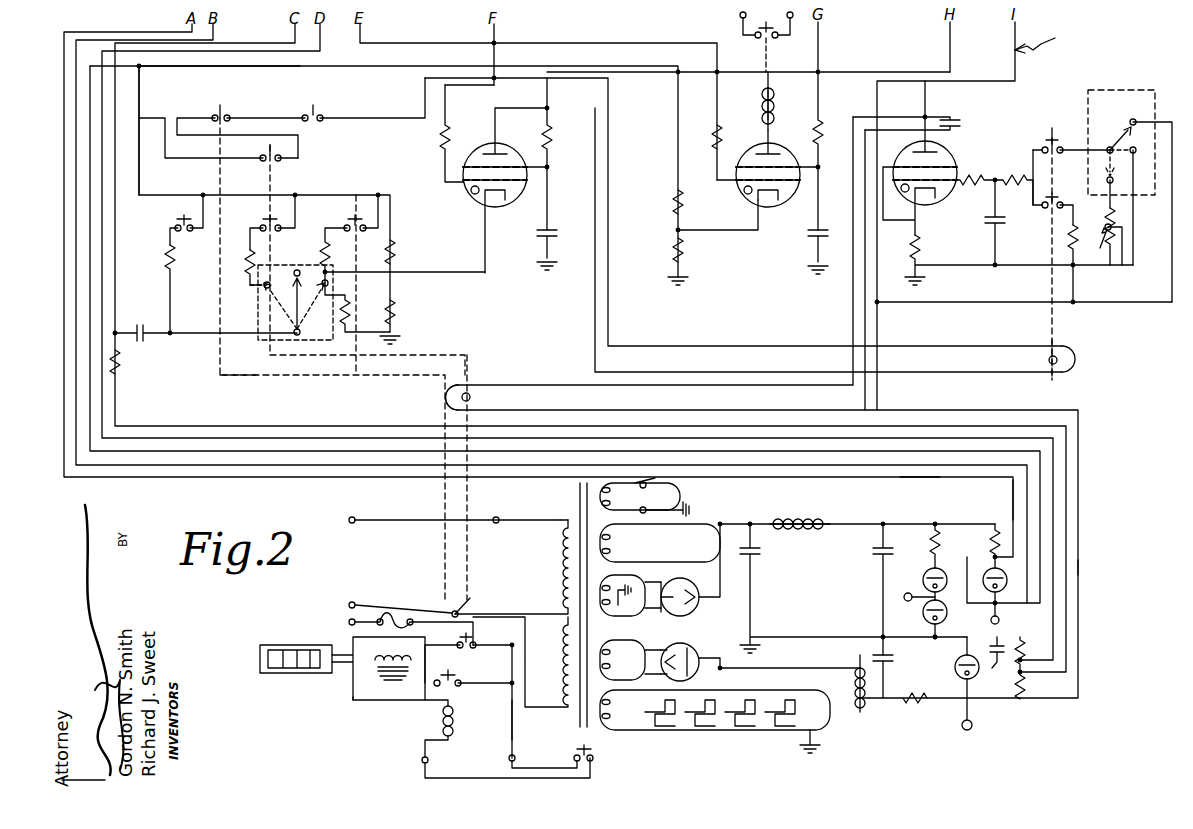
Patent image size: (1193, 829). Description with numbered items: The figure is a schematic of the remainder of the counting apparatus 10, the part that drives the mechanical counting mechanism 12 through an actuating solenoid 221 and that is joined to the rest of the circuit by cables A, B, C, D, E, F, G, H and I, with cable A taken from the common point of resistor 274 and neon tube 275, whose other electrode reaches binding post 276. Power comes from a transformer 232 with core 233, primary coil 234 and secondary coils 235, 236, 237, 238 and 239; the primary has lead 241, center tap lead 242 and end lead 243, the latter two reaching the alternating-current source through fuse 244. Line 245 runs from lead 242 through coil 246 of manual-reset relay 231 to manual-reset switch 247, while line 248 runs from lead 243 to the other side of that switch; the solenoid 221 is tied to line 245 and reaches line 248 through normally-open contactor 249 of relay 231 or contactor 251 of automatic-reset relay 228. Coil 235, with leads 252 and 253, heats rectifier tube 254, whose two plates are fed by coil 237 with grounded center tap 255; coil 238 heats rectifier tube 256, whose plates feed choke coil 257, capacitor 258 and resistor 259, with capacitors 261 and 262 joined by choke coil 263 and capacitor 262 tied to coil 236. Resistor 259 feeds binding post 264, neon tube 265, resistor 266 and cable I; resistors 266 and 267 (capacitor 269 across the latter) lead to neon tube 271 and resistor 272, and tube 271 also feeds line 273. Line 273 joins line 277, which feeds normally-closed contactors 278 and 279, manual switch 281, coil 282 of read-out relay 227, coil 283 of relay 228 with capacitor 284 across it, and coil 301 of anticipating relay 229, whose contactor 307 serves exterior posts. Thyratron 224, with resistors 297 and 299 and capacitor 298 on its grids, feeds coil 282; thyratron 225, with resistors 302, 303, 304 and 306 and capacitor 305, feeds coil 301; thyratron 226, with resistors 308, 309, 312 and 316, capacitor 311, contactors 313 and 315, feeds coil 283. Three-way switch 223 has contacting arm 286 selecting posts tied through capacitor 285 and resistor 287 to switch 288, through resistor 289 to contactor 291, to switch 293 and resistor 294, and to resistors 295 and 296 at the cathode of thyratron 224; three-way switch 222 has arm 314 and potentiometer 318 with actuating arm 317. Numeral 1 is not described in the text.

The control device 1 is at (1078, 565).
The counting apparatus 10 is at (1042, 43).
The mechanical counting mechanism 12 is at (278, 645).
The actuating solenoid 221 is at (385, 652).
The three-way switch 222 is at (1105, 90).
The three-way switch 223 is at (258, 345).
The thyratron 224 is at (483, 150).
The thyratron 225 is at (795, 200).
The thyratron 226 is at (940, 200).
The read-out relay 227 is at (1058, 345).
The automatic-reset relay 228 is at (470, 378).
The anticipating relay 229 is at (760, 100).
The manual-reset relay 231 is at (452, 752).
The transformer 232 is at (562, 518).
The core 233 is at (580, 497).
The primary coil 234 is at (557, 568).
The secondary coil 235 is at (640, 496).
The secondary coil 236 is at (612, 540).
The secondary coil 237 is at (618, 583).
The secondary coil 238 is at (612, 660).
The secondary coil 239 is at (612, 707).
The lead 241 is at (496, 516).
The center tap lead 242 is at (478, 590).
The end lead 243 is at (545, 658).
The fuse 244 is at (398, 615).
The line 245 is at (350, 697).
The coil 246 is at (440, 712).
The manual-reset switch 247 is at (590, 752).
The line 248 is at (514, 725).
The normally-open contactor 249 is at (455, 680).
The normally-open contactor 251 is at (476, 640).
The lead 252 is at (646, 484).
The lead 253 is at (640, 508).
The rectifier tube 254 is at (698, 608).
The center tap 255 is at (618, 605).
The rectifier tube 256 is at (675, 645).
The choke coil 257 is at (853, 680).
The capacitor 258 is at (886, 664).
The resistor 259 is at (915, 702).
The capacitor 261 is at (880, 555).
The capacitor 262 is at (753, 555).
The choke coil 263 is at (810, 518).
The binding post 264 is at (967, 730).
The neon tube 265 is at (955, 665).
The resistor 266 is at (1025, 685).
The resistor 267 is at (1022, 650).
The capacitor / binding post 269 is at (906, 601).
The neon tube 271 is at (924, 575).
The resistor 272 is at (930, 545).
The line 273 is at (240, 68).
The resistor 274 is at (990, 545).
The neon tube 275 is at (985, 572).
The binding post 276 is at (999, 620).
The line 277 is at (139, 180).
The normally-closed contactor 278 is at (275, 165).
The normally-closed contactor 279 is at (214, 112).
The manually-operated switch 281 is at (315, 122).
The coil 282 is at (1048, 360).
The coil 283 is at (470, 397).
The capacitor 284 is at (955, 118).
The capacitor 285 is at (140, 324).
The contacting arm 286 is at (299, 334).
The resistor 287 is at (168, 268).
The switch 288 is at (175, 222).
The resistor 289 is at (250, 268).
The normally-open contactor 291 is at (265, 222).
The switch 293 is at (350, 222).
The resistor 294 is at (347, 312).
The resistor 295 is at (392, 240).
The resistor 296 is at (392, 310).
The resistor 297 is at (443, 142).
The capacitor 298 is at (552, 228).
The resistor 299 is at (550, 140).
The coil 301 is at (778, 100).
The resistor 302 is at (676, 208).
The resistor 303 is at (676, 250).
The resistor 304 is at (717, 140).
The capacitor 305 is at (815, 233).
The resistor 306 is at (822, 135).
The normally-open contactor 307 is at (768, 38).
The resistor 308 is at (918, 245).
The resistor 309 is at (972, 175).
The capacitor 311 is at (992, 215).
The resistor 312 is at (1012, 175).
The normally-closed contactor 313 is at (1055, 135).
The contact arm 314 is at (1108, 148).
The normally-closed contactor 315 is at (1045, 210).
The resistor 316 is at (1070, 240).
The actuating arm 317 is at (1113, 222).
The potentiometer 318 is at (1100, 250).
The cable A is at (920, 477).